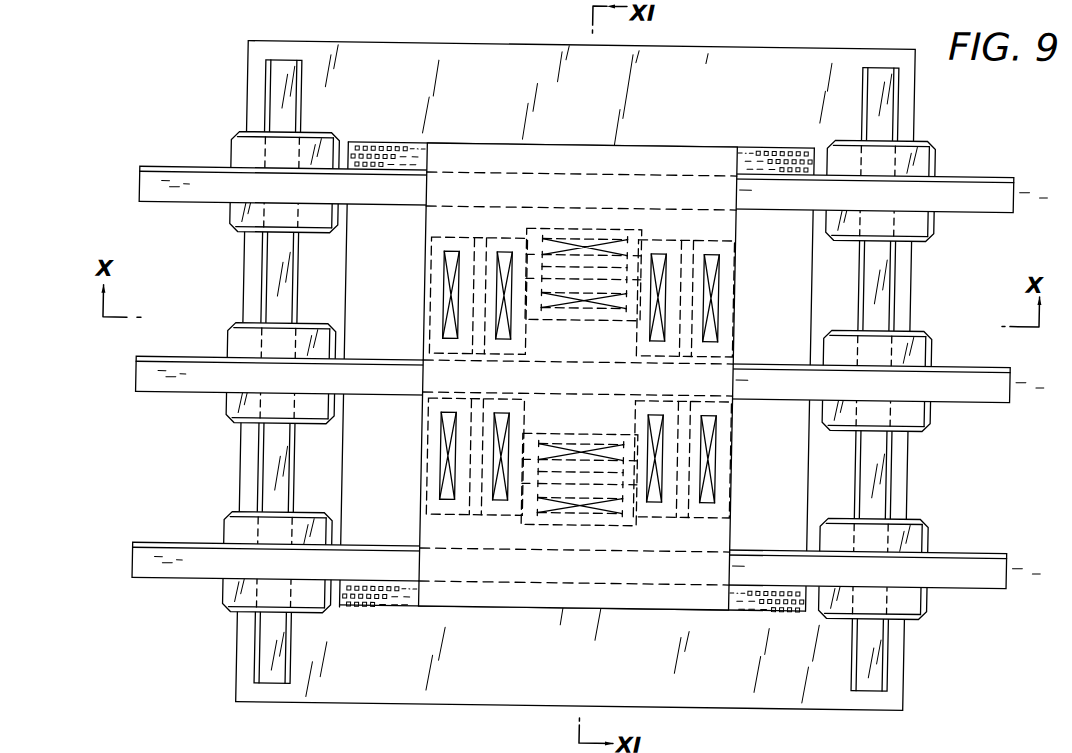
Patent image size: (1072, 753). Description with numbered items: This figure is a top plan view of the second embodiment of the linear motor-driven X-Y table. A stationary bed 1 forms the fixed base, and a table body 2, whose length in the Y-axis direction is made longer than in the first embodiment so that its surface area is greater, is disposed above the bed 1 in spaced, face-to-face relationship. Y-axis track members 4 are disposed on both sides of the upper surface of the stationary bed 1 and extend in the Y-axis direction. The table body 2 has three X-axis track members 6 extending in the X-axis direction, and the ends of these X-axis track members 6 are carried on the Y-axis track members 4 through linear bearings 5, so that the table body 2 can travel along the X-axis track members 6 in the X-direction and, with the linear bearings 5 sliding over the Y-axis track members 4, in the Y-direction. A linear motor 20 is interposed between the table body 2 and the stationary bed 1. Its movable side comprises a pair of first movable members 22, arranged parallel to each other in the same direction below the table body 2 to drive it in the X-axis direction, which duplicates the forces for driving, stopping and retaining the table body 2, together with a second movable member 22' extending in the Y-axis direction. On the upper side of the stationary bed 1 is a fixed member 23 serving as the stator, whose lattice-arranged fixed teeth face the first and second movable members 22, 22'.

The stationary bed 1 is at (774, 56).
The table body 2 is at (727, 608).
The Y-axis track members 4 is at (270, 120).
The linear bearings 5 is at (239, 219).
The X-axis track members 6 is at (184, 175).
The linear motor 20 is at (556, 377).
The first movable members 22 is at (586, 378).
The second movable member 22' is at (549, 316).
The fixed member 23 is at (382, 603).